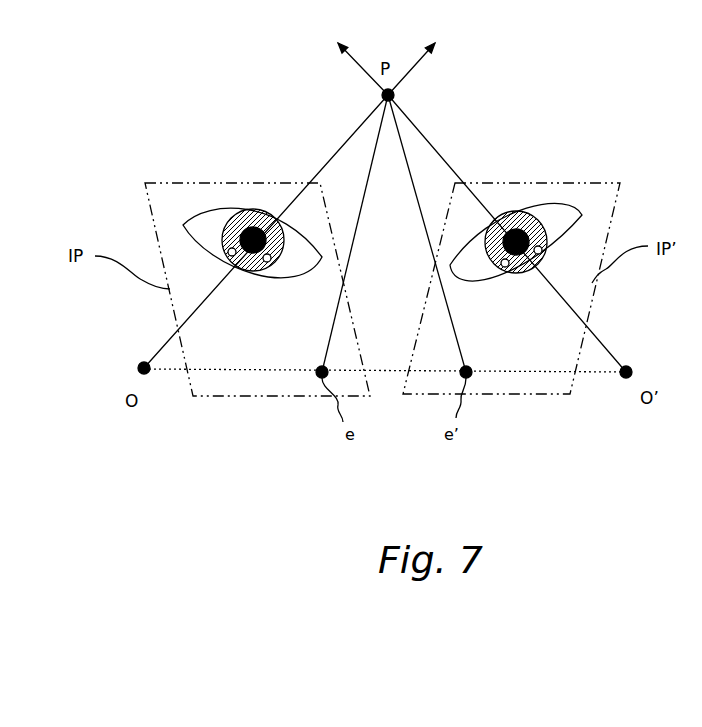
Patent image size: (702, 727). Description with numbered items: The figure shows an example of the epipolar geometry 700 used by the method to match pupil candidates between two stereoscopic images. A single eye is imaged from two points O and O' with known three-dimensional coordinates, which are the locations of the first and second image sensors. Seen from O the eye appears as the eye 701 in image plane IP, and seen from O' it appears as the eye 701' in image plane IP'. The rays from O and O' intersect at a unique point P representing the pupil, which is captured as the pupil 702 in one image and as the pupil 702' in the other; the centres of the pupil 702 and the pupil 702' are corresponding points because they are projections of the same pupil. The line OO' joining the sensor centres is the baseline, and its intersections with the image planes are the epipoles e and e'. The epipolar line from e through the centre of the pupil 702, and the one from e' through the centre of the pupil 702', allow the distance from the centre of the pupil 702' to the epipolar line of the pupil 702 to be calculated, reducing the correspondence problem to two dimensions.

The stereoscopic viewing geometry 700 is at (162, 514).
The eye 701 is at (233, 212).
The pupil 702 is at (242, 217).
The eye 701' is at (526, 212).
The pupil 702' is at (516, 217).